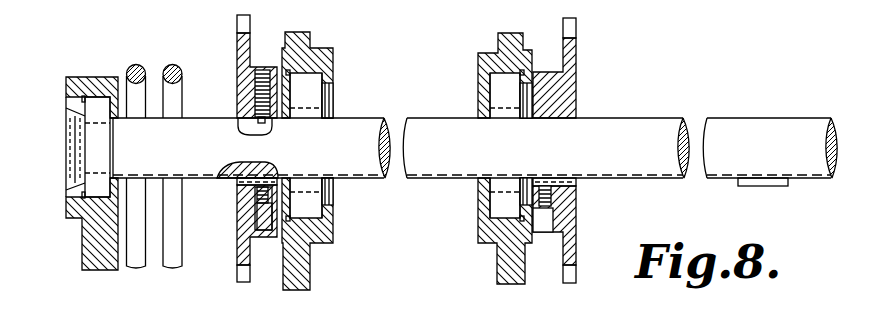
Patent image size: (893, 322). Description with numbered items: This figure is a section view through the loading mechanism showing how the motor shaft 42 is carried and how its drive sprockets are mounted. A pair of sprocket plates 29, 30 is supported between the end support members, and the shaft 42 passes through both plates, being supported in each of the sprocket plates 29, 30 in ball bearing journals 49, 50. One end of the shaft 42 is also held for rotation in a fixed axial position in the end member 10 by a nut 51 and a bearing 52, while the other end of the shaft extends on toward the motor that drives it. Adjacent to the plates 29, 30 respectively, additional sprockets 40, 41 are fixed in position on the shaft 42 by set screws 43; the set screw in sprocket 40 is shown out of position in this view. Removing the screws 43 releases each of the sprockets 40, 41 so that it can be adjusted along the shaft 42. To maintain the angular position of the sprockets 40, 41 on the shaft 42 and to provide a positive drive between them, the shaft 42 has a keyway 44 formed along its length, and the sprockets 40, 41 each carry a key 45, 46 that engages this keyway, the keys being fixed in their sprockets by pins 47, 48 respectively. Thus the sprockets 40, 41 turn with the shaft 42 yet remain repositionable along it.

The end support member 10 is at (82, 246).
The sprocket plate 29 is at (312, 273).
The sprocket plate 30 is at (497, 272).
The sprocket 40 is at (237, 26).
The sprocket 41 is at (575, 50).
The motor shaft 42 is at (668, 119).
The set screw 43 is at (262, 68).
The keyway 44 is at (465, 176).
The key 45 is at (236, 182).
The key 46 is at (577, 190).
The pin 47 is at (238, 203).
The pin 48 is at (550, 199).
The ball bearing journal 49 is at (322, 97).
The ball bearing journal 50 is at (482, 97).
The nut 51 is at (67, 118).
The bearing 52 is at (78, 188).